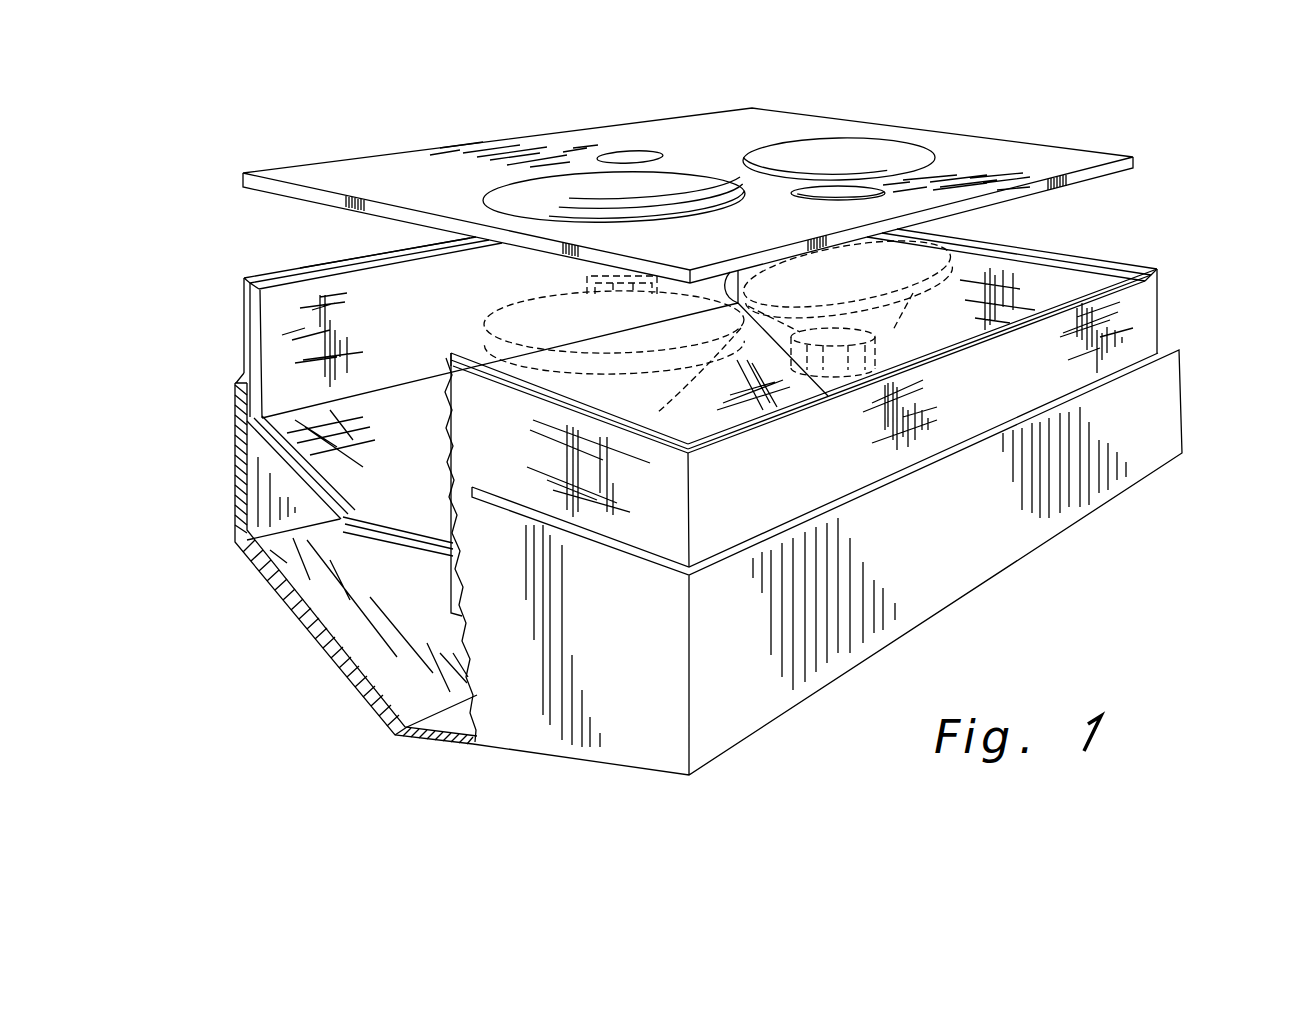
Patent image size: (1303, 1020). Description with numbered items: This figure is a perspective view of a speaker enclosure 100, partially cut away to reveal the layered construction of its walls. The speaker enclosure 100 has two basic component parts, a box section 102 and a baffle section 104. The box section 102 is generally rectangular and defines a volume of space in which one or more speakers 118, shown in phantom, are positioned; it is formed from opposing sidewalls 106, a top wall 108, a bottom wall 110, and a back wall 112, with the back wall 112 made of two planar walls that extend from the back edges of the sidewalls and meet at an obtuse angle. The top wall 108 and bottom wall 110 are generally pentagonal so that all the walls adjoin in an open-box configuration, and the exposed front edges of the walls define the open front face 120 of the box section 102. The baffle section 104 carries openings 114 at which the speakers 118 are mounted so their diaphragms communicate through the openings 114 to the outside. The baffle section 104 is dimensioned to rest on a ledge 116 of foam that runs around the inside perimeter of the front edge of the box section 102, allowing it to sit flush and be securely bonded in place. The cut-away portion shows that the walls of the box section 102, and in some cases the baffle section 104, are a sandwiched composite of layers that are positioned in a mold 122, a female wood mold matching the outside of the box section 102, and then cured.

The speaker enclosure 100 is at (1208, 172).
The box section 102 is at (1163, 321).
The baffle section 104 is at (1065, 148).
The sidewalls 106 is at (243, 352).
The top wall 108 is at (1067, 283).
The bottom wall 110 is at (662, 528).
The back wall 112 is at (360, 493).
The openings 114 is at (838, 162).
The ledge 116 is at (323, 272).
The speakers 118 is at (913, 290).
The front face 120 is at (355, 252).
The mold 122 is at (968, 552).